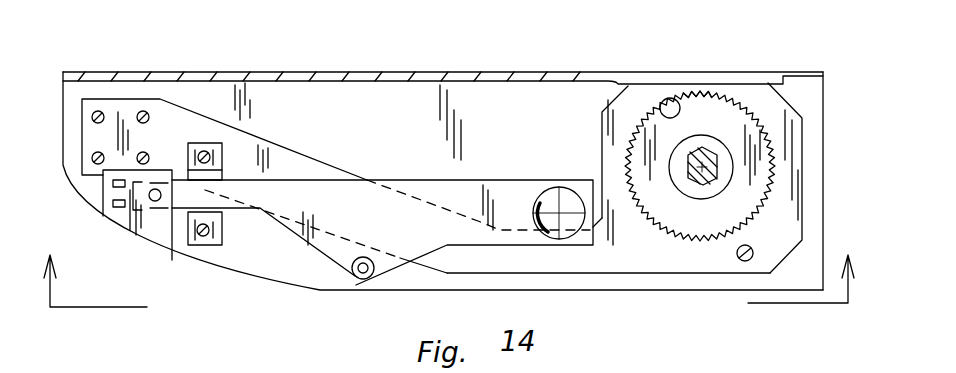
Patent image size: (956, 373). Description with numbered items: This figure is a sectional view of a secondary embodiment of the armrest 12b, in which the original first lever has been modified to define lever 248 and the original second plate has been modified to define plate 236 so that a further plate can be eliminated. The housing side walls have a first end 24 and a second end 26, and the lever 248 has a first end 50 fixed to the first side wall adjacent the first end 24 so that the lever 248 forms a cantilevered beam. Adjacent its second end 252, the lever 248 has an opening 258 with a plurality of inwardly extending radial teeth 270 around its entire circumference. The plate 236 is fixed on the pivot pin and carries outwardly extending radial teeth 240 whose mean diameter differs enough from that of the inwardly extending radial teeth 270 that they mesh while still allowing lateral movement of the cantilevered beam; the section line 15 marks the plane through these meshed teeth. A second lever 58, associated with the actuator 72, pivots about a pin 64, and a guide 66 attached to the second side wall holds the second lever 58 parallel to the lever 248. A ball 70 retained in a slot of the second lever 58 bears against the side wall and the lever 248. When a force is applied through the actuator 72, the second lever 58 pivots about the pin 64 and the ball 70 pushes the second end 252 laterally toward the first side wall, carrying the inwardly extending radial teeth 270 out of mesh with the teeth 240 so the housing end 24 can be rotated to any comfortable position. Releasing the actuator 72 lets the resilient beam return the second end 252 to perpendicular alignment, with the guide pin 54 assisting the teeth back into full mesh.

The armrest 12b is at (205, 66).
The first end 24 is at (62, 117).
The second end 26 is at (825, 180).
The first end 50 is at (95, 99).
The actuator 72 is at (122, 217).
The guide 66 is at (203, 245).
The second lever 58 is at (332, 256).
The pin 64 is at (364, 279).
The ball 70 is at (548, 238).
The lever 248 is at (660, 257).
The second end 252 is at (805, 133).
The outwardly extending radial teeth 240 is at (717, 241).
The opening 258 is at (699, 106).
The plate 236 is at (705, 110).
The inwardly extending radial teeth 270 is at (671, 98).
The guide pin 54 is at (745, 262).
The section line 15 is at (446, 264).